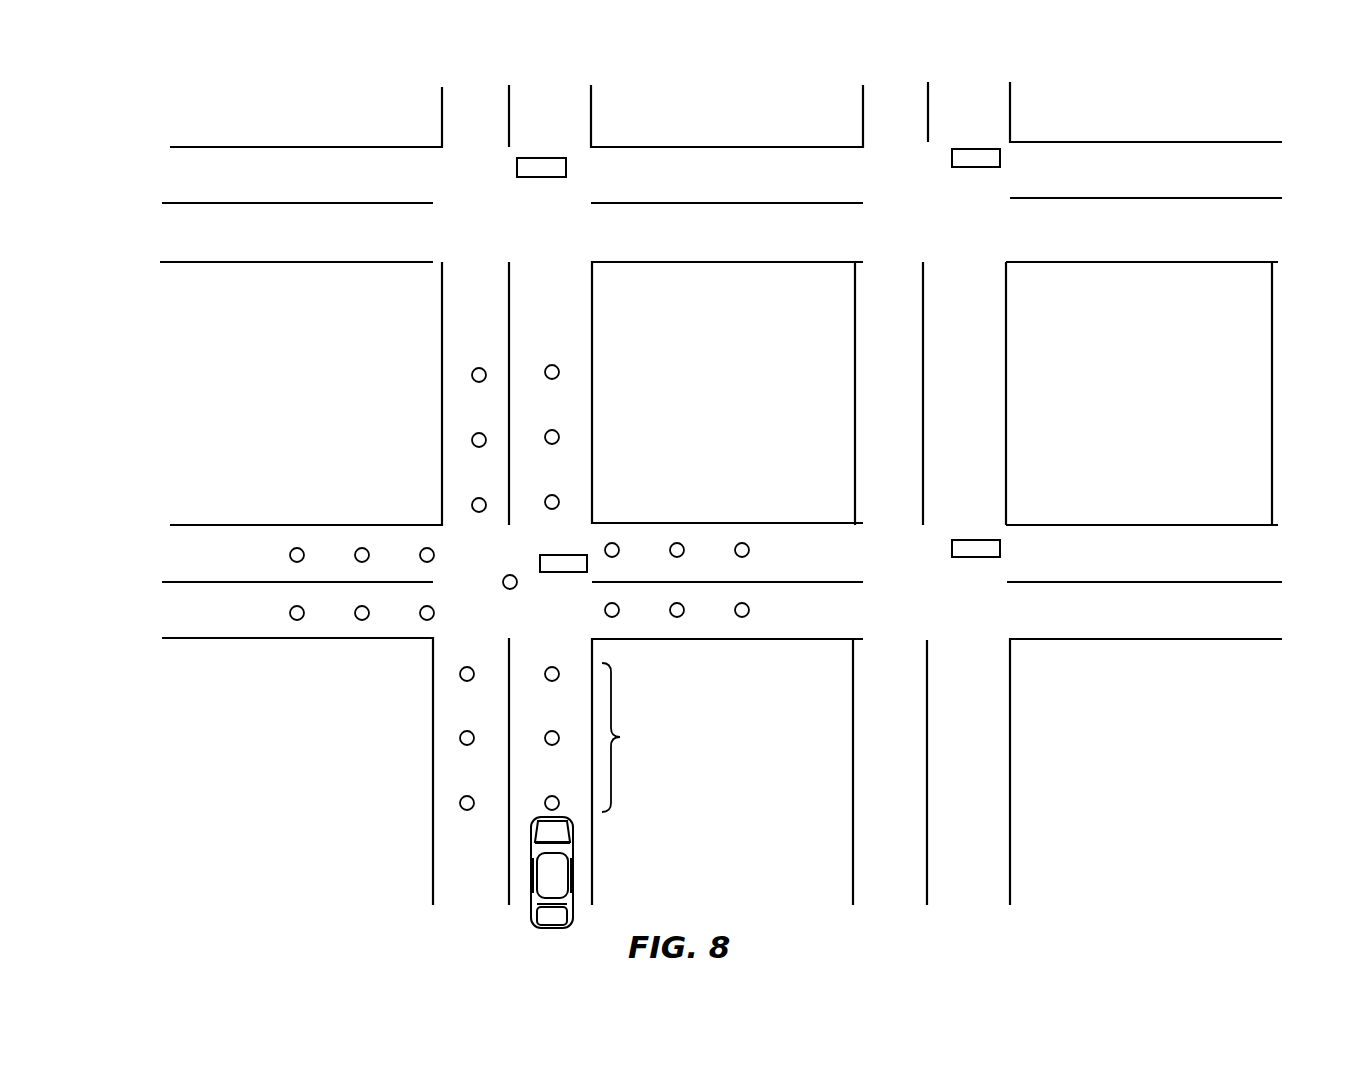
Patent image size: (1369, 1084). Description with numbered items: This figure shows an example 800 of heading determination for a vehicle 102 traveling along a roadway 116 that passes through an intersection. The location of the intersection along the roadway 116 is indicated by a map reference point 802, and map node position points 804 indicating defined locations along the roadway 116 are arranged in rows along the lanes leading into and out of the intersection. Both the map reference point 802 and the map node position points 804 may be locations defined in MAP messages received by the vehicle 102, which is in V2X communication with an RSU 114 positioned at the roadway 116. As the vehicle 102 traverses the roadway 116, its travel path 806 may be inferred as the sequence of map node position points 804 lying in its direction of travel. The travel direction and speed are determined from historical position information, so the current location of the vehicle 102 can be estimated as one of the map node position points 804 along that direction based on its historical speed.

The example of heading determination 800 is at (232, 68).
The roadway 116 is at (720, 146).
The RSU 114 is at (530, 156).
The map reference point 802 is at (507, 575).
The map node position points 804 is at (423, 563).
The travel path 806 is at (637, 737).
The vehicle 102 is at (572, 870).